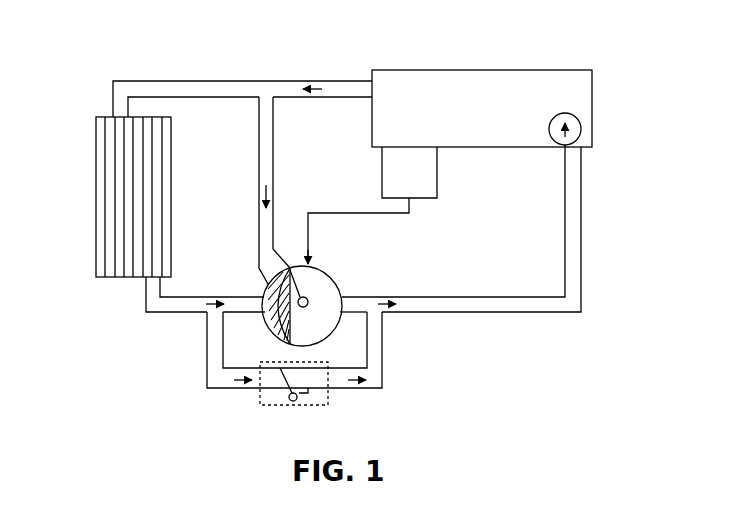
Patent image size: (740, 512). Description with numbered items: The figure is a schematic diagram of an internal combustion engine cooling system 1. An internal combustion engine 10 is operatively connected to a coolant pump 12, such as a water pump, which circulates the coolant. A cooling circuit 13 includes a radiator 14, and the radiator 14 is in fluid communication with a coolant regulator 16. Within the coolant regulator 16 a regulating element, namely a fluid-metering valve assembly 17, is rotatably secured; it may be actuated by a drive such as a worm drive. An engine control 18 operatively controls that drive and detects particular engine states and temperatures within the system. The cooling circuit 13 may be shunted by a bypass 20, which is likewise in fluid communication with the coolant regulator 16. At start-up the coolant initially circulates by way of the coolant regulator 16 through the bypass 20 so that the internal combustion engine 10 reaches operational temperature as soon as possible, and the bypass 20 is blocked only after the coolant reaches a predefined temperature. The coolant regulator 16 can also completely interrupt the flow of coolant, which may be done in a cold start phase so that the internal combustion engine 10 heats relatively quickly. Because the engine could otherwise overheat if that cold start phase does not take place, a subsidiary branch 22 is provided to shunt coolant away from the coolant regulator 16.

The internal combustion engine cooling system 1 is at (131, 47).
The internal combustion engine 10 is at (523, 149).
The coolant pump 12 is at (582, 130).
The cooling circuit 13 is at (212, 80).
The radiator 14 is at (172, 197).
The coolant regulator 16 is at (326, 272).
The fluid-metering valve assembly 17 is at (309, 299).
The engine control 18 is at (372, 205).
The bypass 20 is at (276, 148).
The subsidiary branch 22 is at (375, 362).